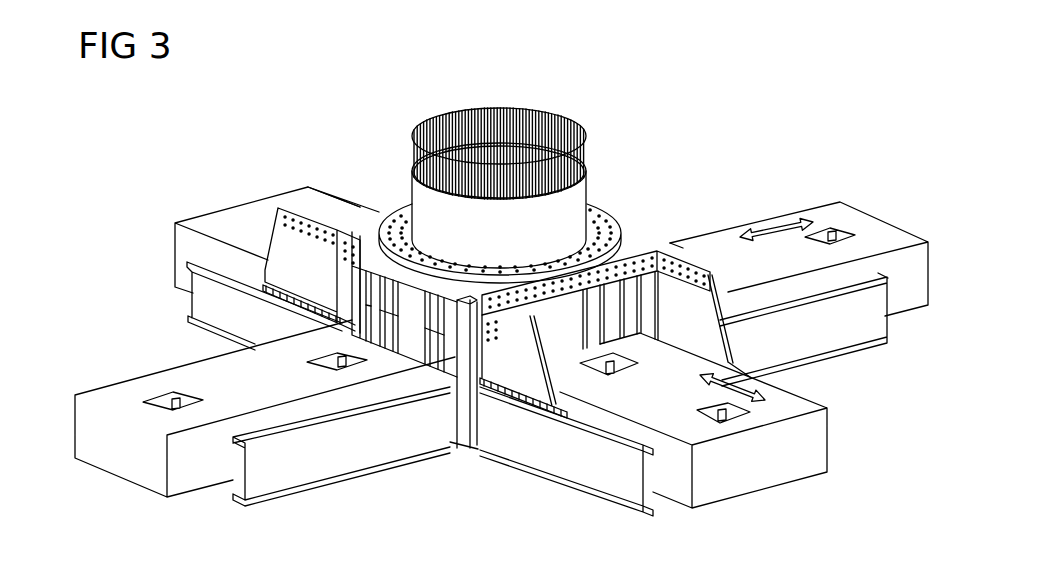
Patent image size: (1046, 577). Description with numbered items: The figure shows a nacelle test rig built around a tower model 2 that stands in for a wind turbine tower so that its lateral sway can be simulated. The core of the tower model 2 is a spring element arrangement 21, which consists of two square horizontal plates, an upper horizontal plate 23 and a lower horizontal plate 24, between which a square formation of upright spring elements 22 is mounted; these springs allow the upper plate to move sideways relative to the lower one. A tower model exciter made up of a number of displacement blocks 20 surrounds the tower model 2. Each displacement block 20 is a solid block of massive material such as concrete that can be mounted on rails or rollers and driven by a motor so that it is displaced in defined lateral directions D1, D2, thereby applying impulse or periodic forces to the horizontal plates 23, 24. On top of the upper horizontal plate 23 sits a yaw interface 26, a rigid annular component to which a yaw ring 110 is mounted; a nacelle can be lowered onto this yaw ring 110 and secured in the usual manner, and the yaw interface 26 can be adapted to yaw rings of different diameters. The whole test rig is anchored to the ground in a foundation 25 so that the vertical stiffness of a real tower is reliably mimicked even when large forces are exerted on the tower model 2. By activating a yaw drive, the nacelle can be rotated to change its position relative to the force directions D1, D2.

The tower model 2 is at (446, 93).
The yaw ring 110 is at (590, 128).
The displacement block 20 is at (232, 212).
The spring element arrangement 21 is at (355, 325).
The upright spring element 22 is at (463, 325).
The upper horizontal plate 23 is at (640, 247).
The lower horizontal plate 24 is at (445, 396).
The foundation 25 is at (850, 340).
The yaw interface 26 is at (407, 192).
The lateral direction D1 is at (790, 226).
The lateral direction D2 is at (735, 386).